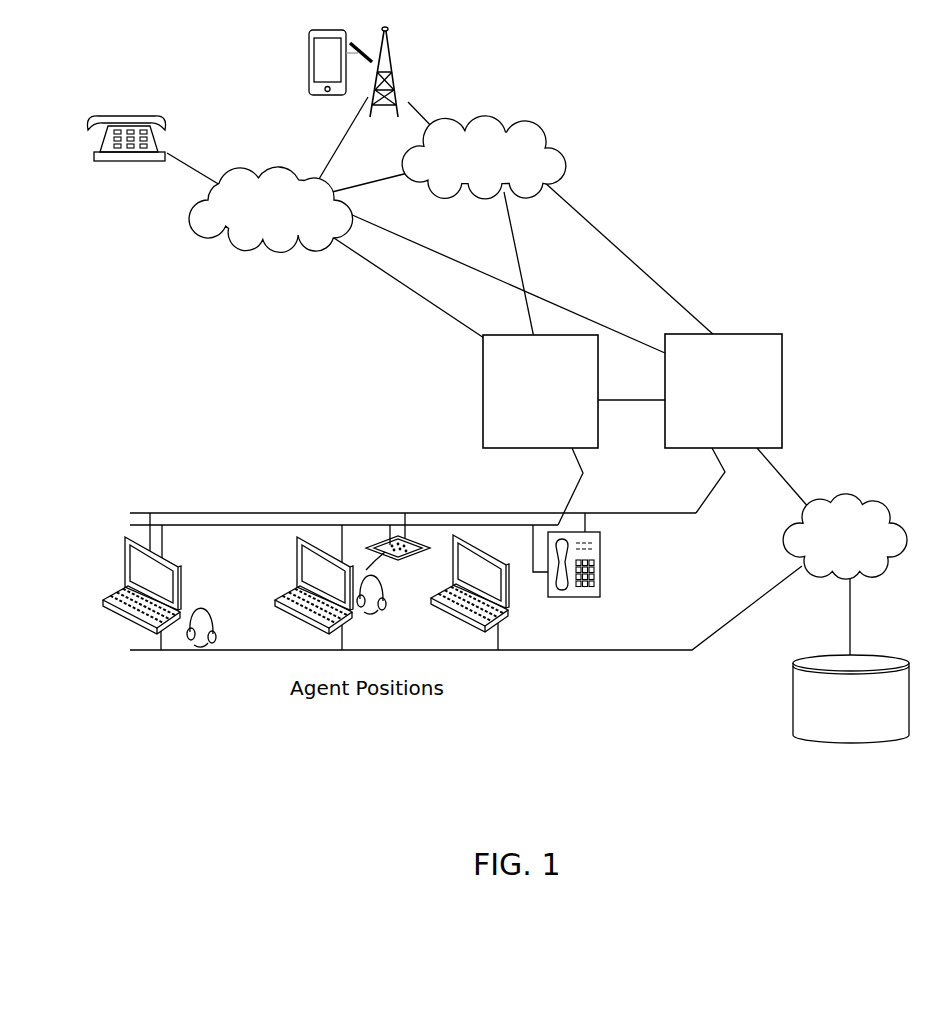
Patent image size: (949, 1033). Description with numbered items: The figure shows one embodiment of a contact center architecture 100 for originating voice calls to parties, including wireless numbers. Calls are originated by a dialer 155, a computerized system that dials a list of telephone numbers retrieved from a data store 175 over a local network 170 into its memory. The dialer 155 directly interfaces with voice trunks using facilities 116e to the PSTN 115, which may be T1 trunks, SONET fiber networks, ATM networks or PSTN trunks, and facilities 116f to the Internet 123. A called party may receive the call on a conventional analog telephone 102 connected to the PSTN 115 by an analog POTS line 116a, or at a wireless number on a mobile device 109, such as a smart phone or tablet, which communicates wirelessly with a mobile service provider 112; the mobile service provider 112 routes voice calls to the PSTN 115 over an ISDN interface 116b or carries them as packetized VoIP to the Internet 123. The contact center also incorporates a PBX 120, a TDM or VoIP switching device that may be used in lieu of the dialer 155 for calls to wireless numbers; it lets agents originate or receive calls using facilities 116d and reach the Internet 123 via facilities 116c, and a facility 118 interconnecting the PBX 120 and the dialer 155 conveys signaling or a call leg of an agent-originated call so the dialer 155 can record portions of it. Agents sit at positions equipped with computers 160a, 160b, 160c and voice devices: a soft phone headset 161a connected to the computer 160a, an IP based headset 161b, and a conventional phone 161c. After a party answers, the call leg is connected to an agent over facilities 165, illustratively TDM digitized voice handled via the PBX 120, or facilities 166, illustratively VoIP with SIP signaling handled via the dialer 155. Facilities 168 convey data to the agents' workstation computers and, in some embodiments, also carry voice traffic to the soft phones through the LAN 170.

The contact center architecture 100 is at (702, 106).
The conventional analog telephone 102 is at (165, 148).
The mobile device 109 is at (308, 68).
The mobile service provider 112 is at (400, 88).
The public switched telephone network 115 is at (271, 209).
The POTS line 116a is at (196, 177).
The ISDN interface 116b is at (348, 127).
The facilities to the Internet 116c is at (522, 272).
The facilities 116d is at (428, 303).
The PSTN trunks 116e is at (456, 240).
The facilities to the Internet 116f is at (640, 240).
The facility 118 is at (632, 402).
The private branch exchange 120 is at (540, 391).
The Internet 123 is at (484, 157).
The dialer 155 is at (723, 391).
The computer 160a is at (202, 553).
The computer 160b is at (358, 551).
The computer 160c is at (508, 582).
The headset 161a is at (237, 606).
The IP based headset 161b is at (384, 590).
The conventional phone 161c is at (585, 598).
The facilities 165 is at (275, 525).
The facilities 166 is at (270, 512).
The facilities 168 is at (660, 652).
The local network 170 is at (845, 536).
The data store 175 is at (851, 699).